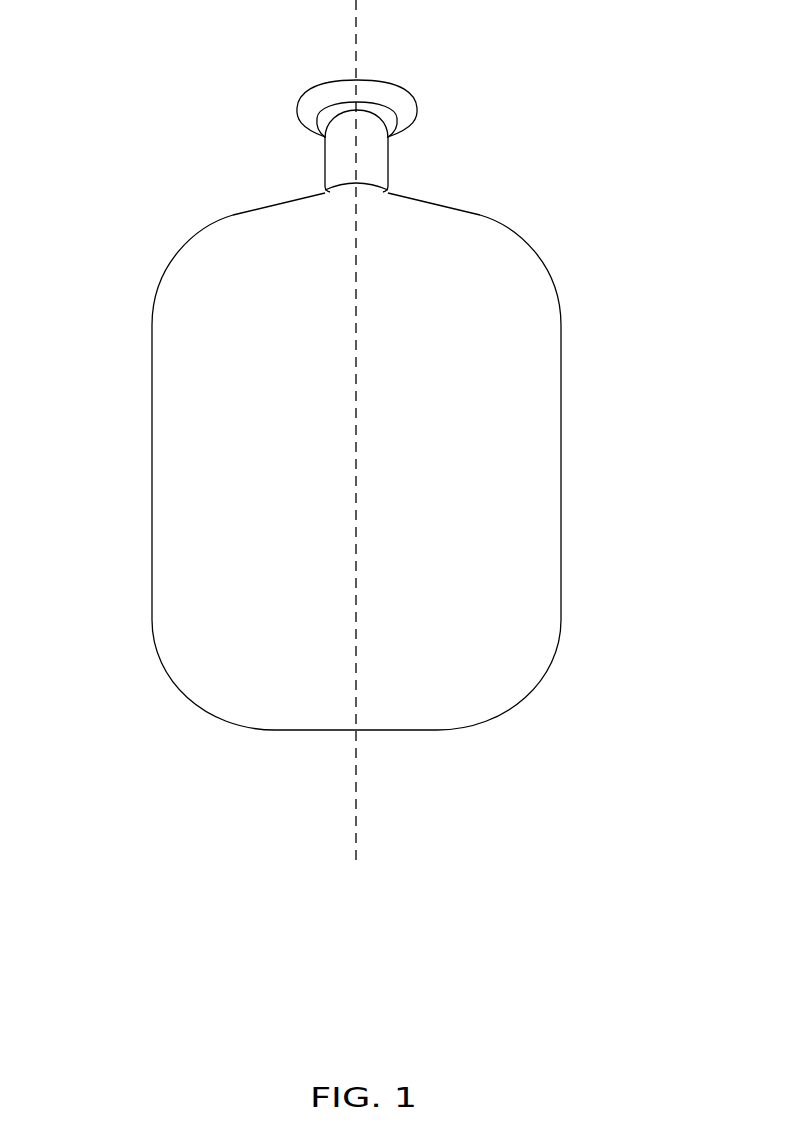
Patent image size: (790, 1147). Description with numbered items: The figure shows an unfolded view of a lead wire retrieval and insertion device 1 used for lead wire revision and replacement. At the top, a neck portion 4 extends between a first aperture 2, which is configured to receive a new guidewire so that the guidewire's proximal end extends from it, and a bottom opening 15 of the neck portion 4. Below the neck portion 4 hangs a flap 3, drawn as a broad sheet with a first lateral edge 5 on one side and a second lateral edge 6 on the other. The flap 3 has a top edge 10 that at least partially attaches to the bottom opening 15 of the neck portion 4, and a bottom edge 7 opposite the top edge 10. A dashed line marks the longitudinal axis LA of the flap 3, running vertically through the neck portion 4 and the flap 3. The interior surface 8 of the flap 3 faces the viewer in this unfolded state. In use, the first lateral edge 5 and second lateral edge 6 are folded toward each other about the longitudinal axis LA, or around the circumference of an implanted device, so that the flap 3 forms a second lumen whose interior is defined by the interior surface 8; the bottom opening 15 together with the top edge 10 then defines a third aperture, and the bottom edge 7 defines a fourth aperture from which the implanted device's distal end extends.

The lead wire retrieval and insertion device 1 is at (148, 50).
The first aperture 2 is at (387, 83).
The flap 3 is at (371, 469).
The neck portion 4 is at (373, 157).
The first lateral edge 5 is at (152, 415).
The second lateral edge 6 is at (561, 442).
The bottom edge 7 is at (340, 732).
The interior surface 8 is at (247, 552).
The top edge 10 is at (233, 215).
The bottom opening 15 is at (373, 202).
The longitudinal axis LA is at (356, 785).